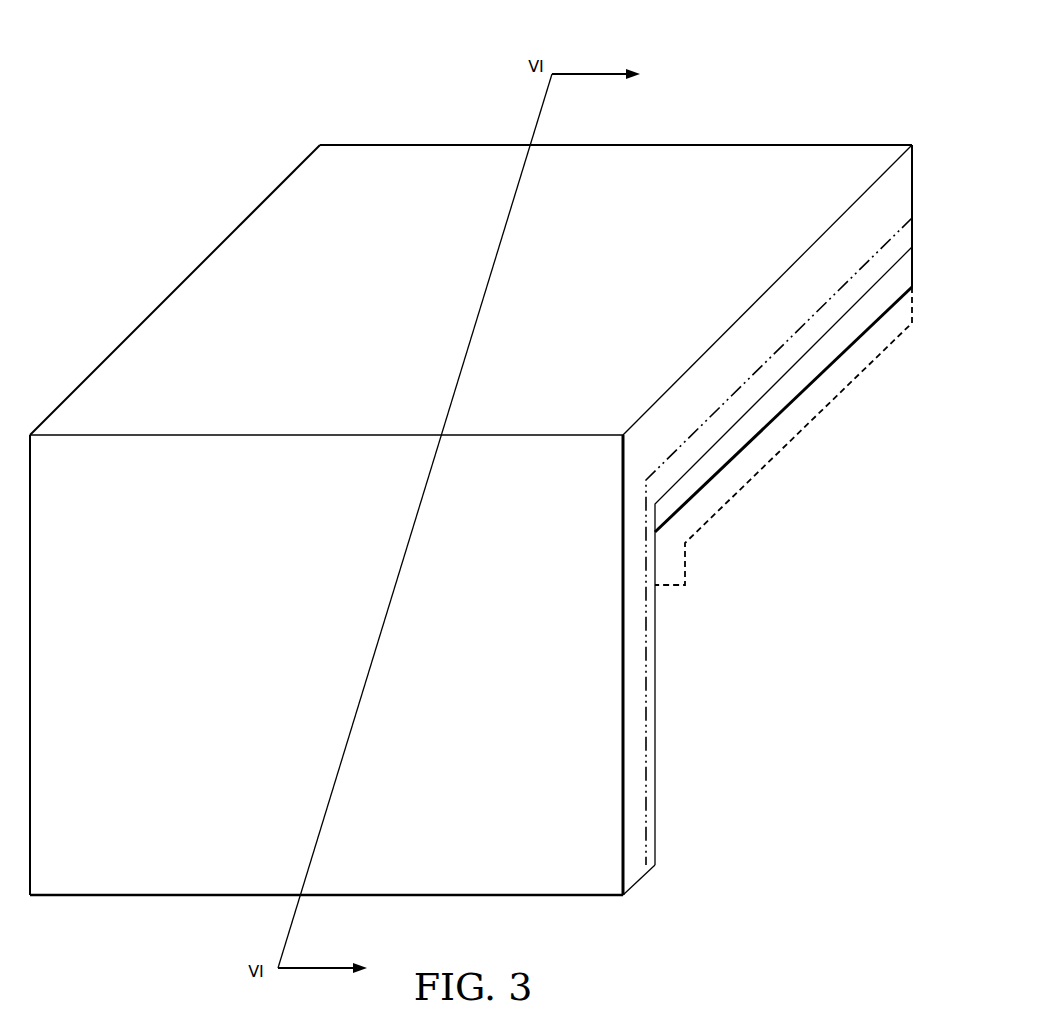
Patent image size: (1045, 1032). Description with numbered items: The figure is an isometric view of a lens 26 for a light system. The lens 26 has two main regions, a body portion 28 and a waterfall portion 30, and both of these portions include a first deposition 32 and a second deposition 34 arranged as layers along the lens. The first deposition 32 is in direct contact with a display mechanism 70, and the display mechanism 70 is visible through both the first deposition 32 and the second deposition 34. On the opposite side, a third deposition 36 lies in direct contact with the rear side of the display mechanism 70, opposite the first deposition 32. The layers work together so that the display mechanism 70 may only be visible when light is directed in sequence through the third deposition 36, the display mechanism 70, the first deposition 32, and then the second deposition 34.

The lens 26 is at (204, 162).
The body portion 28 is at (317, 298).
The waterfall portion 30 is at (440, 822).
The first deposition 32 is at (872, 278).
The second deposition 34 is at (805, 297).
The third deposition 36 is at (728, 478).
The display mechanism 70 is at (807, 365).